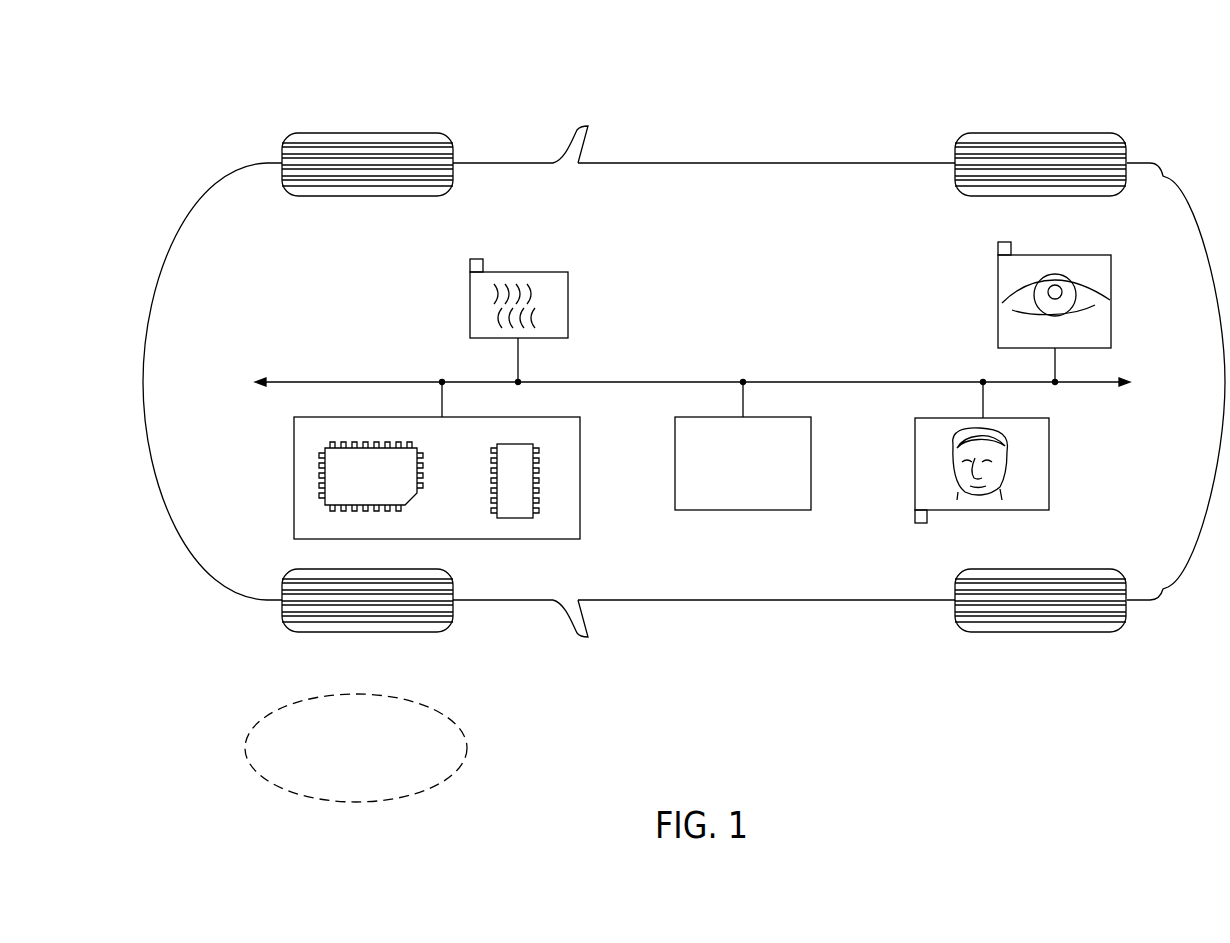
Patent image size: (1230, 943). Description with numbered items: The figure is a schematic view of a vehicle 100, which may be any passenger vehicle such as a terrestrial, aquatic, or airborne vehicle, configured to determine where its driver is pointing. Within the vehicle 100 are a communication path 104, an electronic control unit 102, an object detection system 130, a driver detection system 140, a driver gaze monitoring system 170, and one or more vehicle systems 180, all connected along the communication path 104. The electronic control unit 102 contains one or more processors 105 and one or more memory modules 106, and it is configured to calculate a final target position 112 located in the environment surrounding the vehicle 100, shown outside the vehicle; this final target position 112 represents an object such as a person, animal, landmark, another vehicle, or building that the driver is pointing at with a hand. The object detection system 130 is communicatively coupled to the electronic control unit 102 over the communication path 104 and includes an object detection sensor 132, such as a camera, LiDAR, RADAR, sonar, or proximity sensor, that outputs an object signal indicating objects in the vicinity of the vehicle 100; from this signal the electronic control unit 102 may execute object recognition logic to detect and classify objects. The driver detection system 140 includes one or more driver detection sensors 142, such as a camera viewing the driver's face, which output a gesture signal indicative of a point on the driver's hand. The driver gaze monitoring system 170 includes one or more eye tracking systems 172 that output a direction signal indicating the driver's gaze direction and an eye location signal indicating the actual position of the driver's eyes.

The vehicle 100 is at (1060, 113).
The electronic control unit 102 is at (580, 478).
The communication path 104 is at (330, 380).
The processor 105 is at (410, 500).
The memory module 106 is at (495, 445).
The final target position 112 is at (447, 712).
The object detection system 130 is at (568, 302).
The object detection sensor 132 is at (476, 259).
The driver detection system 140 is at (1049, 465).
The driver detection sensor 142 is at (921, 523).
The driver gaze monitoring system 170 is at (1111, 301).
The eye tracking system 172 is at (1008, 242).
The vehicle systems 180 is at (811, 465).